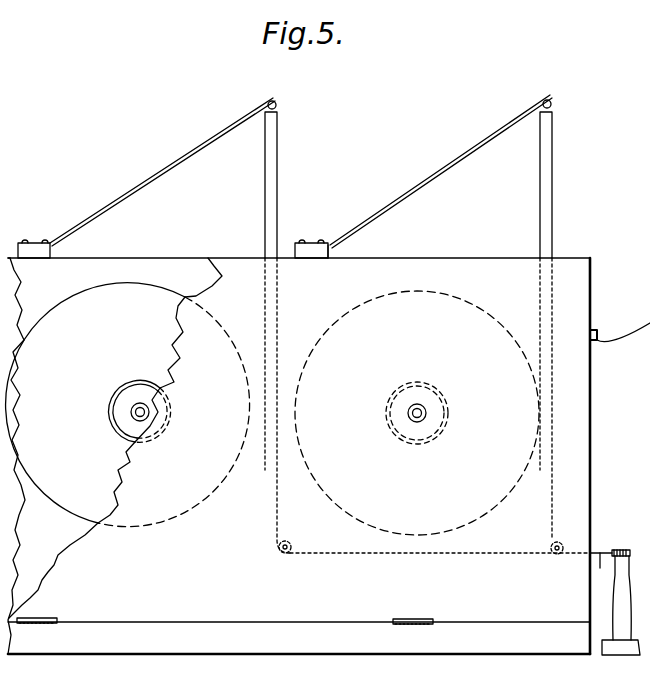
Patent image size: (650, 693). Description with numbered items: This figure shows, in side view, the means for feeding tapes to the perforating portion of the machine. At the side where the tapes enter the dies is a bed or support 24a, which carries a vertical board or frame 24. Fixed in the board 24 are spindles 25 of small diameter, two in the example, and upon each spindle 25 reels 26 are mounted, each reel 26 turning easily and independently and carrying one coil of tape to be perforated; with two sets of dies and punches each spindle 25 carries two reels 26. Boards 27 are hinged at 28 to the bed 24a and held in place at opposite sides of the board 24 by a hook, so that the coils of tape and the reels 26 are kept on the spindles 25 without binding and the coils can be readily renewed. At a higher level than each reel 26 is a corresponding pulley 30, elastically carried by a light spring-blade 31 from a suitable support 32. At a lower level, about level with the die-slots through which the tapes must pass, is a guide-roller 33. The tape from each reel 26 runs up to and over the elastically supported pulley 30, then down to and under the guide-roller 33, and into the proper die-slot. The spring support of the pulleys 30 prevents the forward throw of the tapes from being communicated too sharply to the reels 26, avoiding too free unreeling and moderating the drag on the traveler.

The vertical board or frame 24 is at (299, 456).
The bed or support 24a is at (299, 636).
The spindle 25 is at (131, 411).
The reel 26 is at (272, 409).
The board 27 is at (16, 350).
The hinge 28 is at (45, 618).
The pulley 30 is at (278, 113).
The spring-blade 31 is at (160, 181).
The support 32 is at (40, 253).
The guide-roller 33 is at (292, 546).
The connecting rod n is at (599, 571).